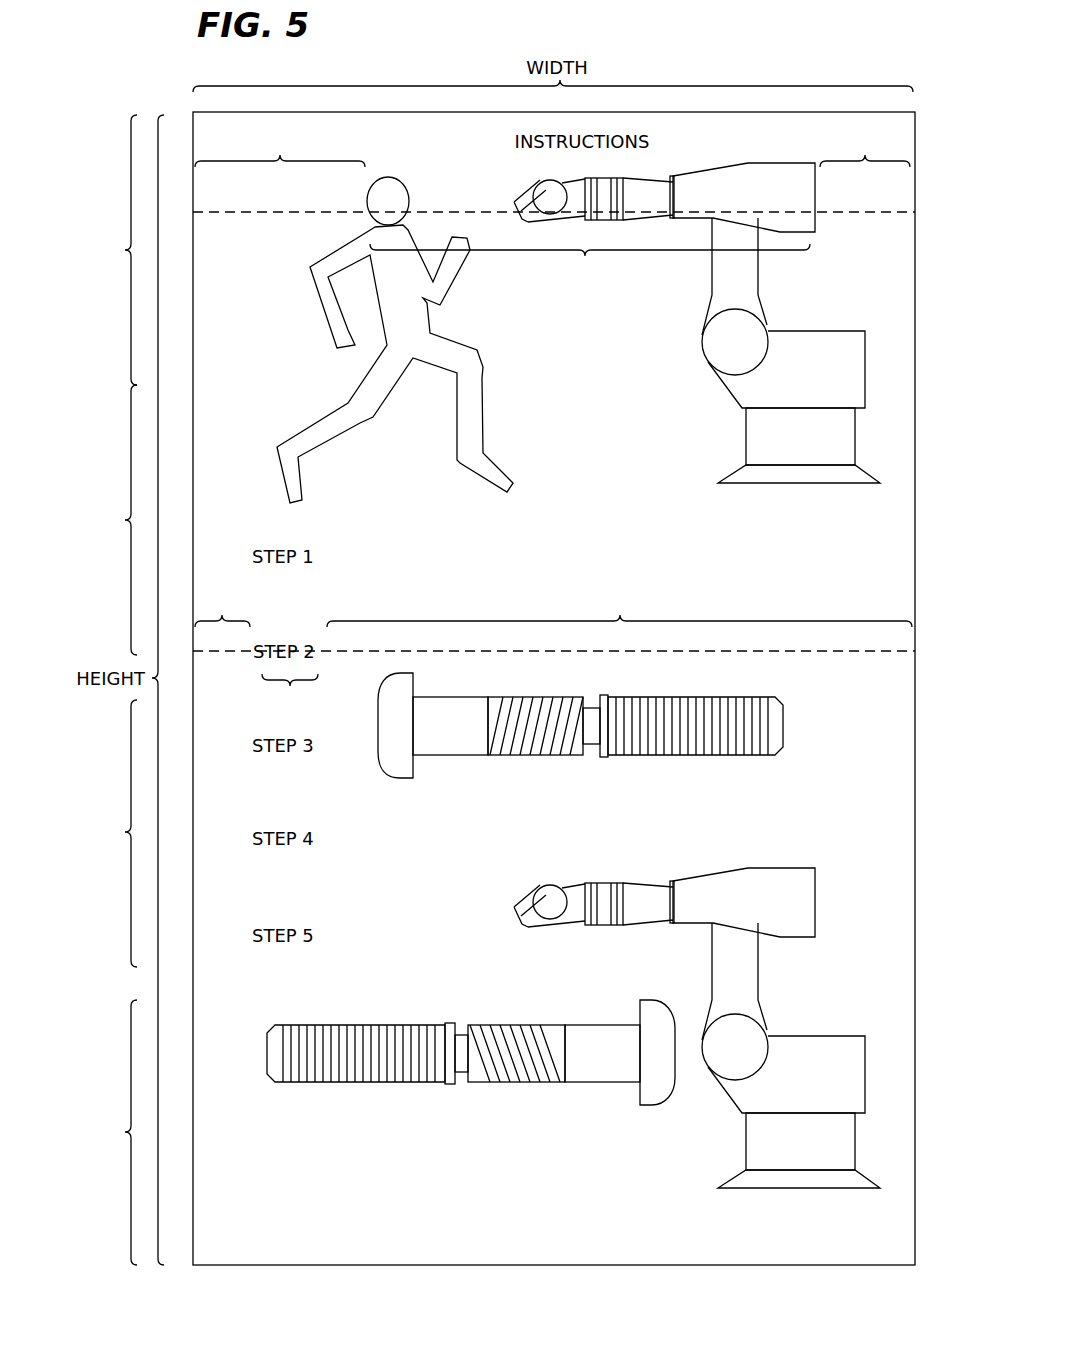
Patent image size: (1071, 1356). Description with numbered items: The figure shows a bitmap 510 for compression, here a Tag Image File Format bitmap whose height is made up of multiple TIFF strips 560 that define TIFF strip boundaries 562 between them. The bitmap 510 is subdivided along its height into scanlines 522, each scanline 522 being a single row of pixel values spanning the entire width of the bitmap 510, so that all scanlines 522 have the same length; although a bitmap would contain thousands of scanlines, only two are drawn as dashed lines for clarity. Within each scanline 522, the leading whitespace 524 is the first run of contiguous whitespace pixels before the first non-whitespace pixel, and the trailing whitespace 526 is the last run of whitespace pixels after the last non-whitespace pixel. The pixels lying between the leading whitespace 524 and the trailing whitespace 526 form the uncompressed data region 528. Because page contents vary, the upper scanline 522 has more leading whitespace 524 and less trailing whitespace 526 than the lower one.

The bitmap 510 is at (405, 1266).
The scanline 522 is at (268, 213).
The leading whitespace 524 is at (280, 379).
The trailing whitespace 526 is at (619, 379).
The uncompressed data region 528 is at (536, 481).
The TIFF strip 560 is at (98, 690).
The TIFF strip boundary 562 is at (128, 988).